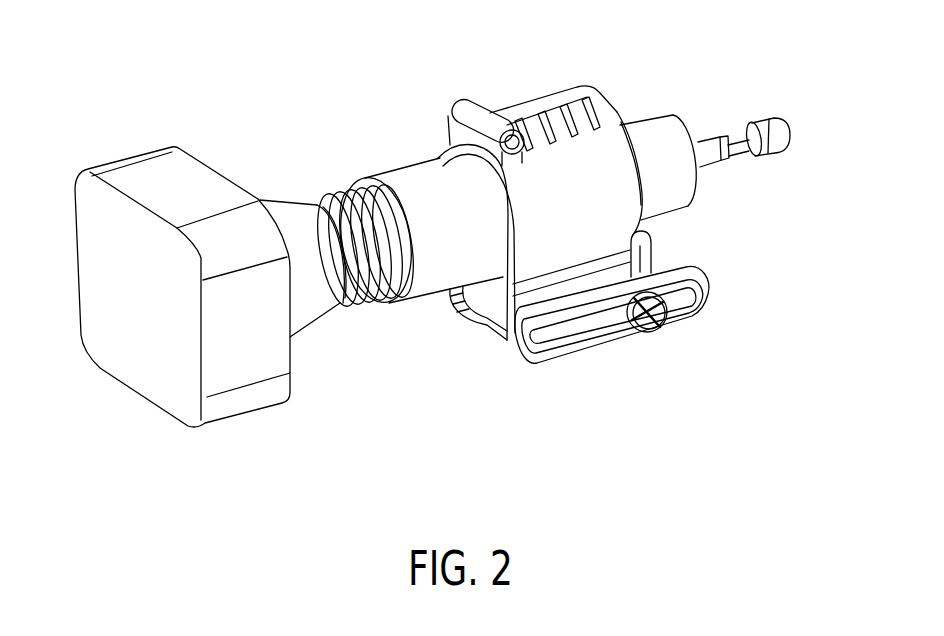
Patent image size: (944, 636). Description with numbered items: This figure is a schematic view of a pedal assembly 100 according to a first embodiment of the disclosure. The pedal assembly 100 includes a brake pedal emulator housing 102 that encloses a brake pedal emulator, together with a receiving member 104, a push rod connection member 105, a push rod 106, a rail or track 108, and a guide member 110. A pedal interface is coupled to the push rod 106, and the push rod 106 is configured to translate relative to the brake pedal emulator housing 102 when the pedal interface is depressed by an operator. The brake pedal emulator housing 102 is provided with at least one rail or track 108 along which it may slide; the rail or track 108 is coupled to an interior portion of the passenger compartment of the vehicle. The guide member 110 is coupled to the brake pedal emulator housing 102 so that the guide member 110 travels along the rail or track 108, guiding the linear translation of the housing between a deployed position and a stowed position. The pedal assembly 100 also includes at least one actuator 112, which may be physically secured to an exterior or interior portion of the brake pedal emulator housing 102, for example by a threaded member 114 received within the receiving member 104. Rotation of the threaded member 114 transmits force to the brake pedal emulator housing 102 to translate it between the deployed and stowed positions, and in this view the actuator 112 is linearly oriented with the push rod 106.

The pedal assembly 100 is at (764, 49).
The brake pedal emulator housing 102 is at (493, 310).
The receiving member 104 is at (445, 220).
The push rod connection member 105 is at (682, 200).
The push rod 106 is at (722, 155).
The rail or track 108 is at (688, 310).
The guide member 110 is at (667, 323).
The actuator 112 is at (163, 367).
The threaded member 114 is at (347, 200).